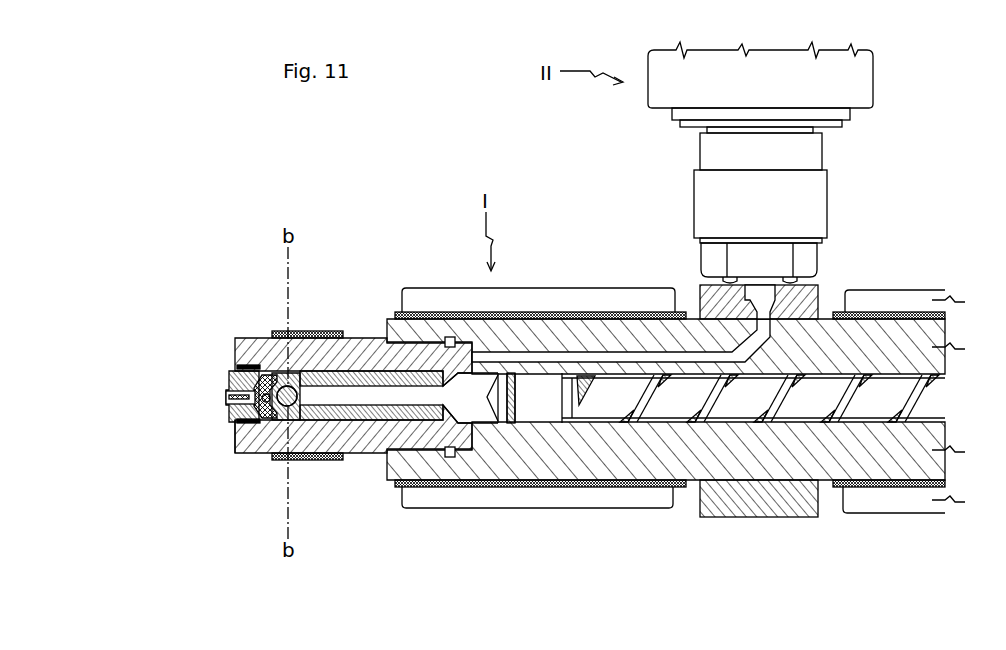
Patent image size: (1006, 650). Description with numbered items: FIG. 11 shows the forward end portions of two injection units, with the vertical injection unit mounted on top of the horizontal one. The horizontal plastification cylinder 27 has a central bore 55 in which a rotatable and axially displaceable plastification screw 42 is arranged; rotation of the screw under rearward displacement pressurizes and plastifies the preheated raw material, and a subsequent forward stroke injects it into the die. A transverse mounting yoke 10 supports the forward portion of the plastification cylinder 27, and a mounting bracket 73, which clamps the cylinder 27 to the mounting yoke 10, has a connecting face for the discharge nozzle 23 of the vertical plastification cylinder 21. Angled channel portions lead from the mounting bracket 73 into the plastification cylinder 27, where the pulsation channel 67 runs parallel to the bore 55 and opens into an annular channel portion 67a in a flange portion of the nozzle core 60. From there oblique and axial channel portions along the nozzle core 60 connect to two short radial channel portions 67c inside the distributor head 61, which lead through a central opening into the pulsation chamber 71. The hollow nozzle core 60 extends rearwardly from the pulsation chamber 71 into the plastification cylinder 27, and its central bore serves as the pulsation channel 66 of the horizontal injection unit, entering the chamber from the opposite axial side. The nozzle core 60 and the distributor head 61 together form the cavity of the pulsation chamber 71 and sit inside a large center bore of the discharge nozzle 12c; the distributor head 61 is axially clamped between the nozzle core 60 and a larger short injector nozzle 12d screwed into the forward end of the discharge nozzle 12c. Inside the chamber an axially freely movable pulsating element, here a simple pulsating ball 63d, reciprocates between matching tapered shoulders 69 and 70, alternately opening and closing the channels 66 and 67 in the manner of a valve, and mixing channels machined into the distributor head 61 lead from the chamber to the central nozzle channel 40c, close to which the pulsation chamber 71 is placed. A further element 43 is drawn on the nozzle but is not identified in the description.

The transverse mounting yoke 10 is at (750, 503).
The discharge nozzle 12c is at (327, 461).
The injector nozzle 12d is at (227, 392).
The vertical plastification cylinder 21 is at (667, 93).
The discharge nozzle 23 is at (810, 187).
The plastification cylinder 27 is at (628, 460).
The nozzle channel 40c is at (232, 377).
The plastification screw 42 is at (678, 405).
The heater band 43 is at (322, 331).
The central bore 55 is at (538, 484).
The nozzle core 60 is at (372, 418).
The distributor head 61 is at (237, 454).
The valve seat 63d is at (283, 373).
The pulsation channel 66 is at (364, 397).
The pulsation channel 67 is at (588, 358).
The annular channel portion 67a is at (482, 410).
The radial channel portions 67c is at (270, 380).
The tapered shoulder 69 is at (235, 422).
The tapered shoulder 70 is at (288, 457).
The pulsation chamber 71 is at (267, 455).
The mounting bracket 73 is at (803, 303).